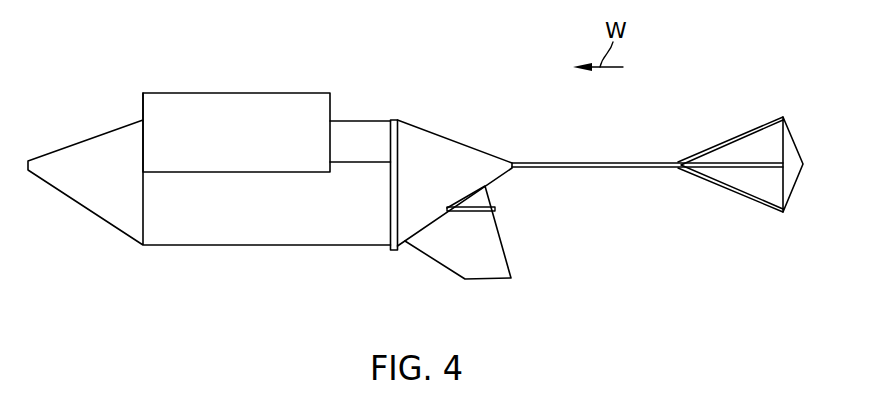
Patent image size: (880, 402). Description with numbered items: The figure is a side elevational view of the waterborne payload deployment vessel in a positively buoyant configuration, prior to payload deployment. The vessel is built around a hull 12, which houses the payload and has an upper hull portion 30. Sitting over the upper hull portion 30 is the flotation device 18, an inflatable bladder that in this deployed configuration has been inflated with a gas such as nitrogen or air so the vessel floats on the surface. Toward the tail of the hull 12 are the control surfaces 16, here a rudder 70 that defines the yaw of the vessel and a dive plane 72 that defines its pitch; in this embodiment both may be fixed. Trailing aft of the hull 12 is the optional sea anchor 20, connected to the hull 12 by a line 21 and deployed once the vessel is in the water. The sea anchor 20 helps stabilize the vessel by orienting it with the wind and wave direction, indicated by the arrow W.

The hull 12 is at (143, 247).
The control surfaces 16 is at (504, 260).
The flotation device 18 is at (235, 93).
The sea anchor 20 is at (793, 133).
The line 21 is at (585, 163).
The upper hull portion 30 is at (362, 121).
The rudder 70 is at (507, 252).
The dive plane 72 is at (495, 209).